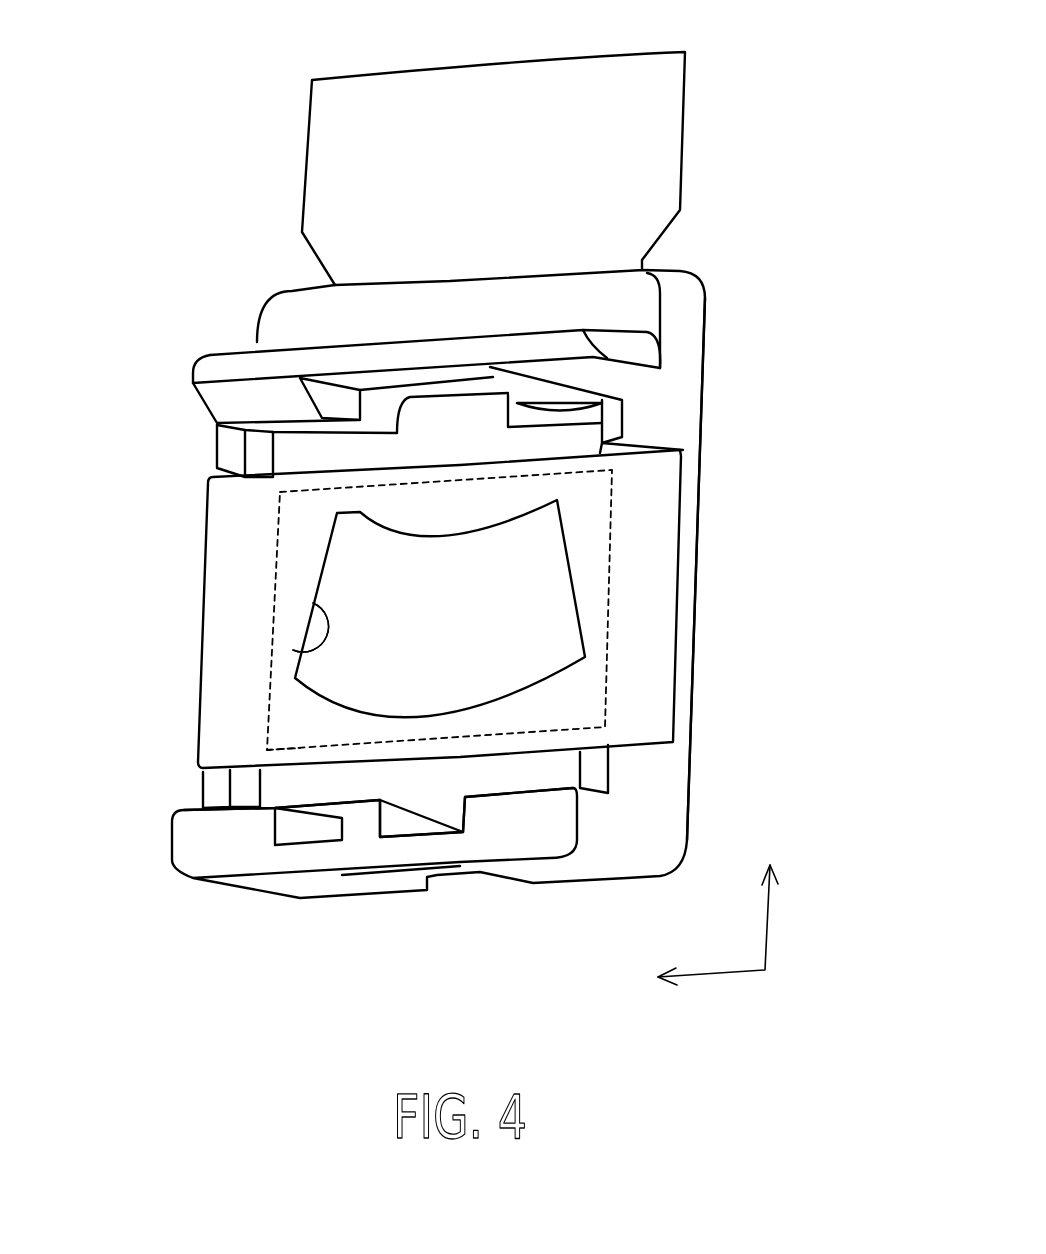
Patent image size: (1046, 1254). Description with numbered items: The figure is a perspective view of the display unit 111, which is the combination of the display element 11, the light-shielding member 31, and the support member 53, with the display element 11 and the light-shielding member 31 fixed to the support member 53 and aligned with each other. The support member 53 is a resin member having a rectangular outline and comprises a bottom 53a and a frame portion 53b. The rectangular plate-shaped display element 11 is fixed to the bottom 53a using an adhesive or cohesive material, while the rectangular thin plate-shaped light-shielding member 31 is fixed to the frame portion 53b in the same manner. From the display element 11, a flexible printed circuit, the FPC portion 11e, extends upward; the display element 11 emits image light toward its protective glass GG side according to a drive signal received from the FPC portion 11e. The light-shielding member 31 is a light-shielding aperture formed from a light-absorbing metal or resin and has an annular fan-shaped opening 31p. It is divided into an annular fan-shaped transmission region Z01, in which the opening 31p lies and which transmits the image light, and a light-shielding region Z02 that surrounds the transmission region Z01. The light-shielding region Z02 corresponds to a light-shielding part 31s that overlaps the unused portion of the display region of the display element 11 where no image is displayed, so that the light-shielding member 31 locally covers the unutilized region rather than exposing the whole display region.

The display unit 111 is at (733, 130).
The FPC portion 11e is at (367, 170).
The display element 11 is at (425, 813).
The support member 53 is at (693, 320).
The bottom 53a is at (362, 820).
The frame portion 53b is at (687, 617).
The light-shielding member 31 is at (653, 550).
The opening 31p is at (280, 657).
The light-shielding part 31s is at (307, 733).
The transmission region Z01 is at (383, 600).
The light-shielding region Z02 is at (290, 618).
The protective glass GG is at (613, 647).